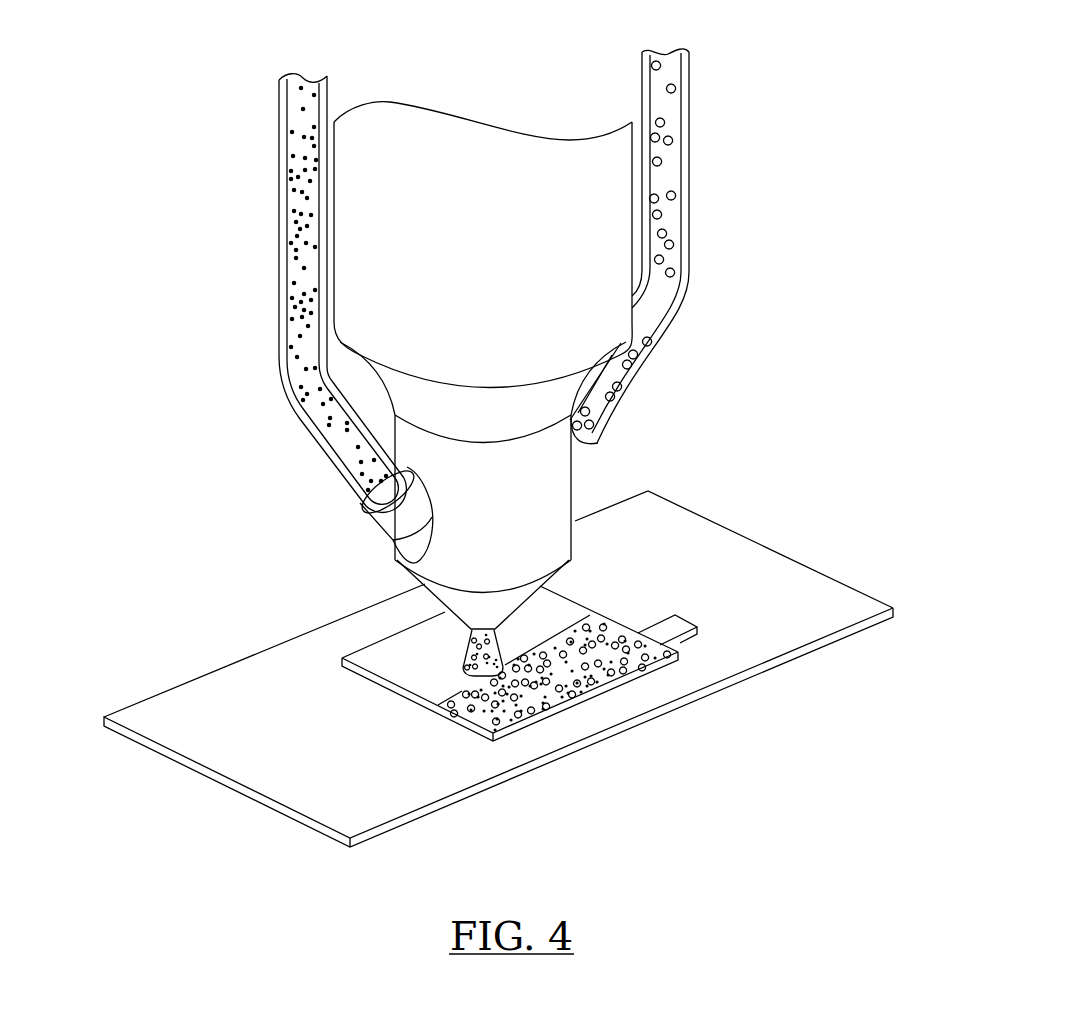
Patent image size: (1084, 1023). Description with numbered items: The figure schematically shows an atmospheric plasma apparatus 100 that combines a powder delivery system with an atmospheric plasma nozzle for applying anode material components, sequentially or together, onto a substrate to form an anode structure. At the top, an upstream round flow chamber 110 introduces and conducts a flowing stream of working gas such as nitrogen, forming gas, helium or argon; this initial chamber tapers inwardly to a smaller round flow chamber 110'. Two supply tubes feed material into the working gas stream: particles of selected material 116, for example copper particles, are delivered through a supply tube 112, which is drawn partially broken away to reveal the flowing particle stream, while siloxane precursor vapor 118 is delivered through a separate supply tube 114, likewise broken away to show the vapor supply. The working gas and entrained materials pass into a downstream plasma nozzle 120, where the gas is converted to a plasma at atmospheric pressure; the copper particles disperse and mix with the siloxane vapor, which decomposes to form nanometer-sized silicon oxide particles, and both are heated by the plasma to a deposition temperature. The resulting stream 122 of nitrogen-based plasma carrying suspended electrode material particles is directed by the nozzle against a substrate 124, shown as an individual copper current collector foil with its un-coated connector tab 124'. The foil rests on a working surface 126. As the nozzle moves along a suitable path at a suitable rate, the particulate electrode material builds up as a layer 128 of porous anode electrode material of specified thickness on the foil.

The atmospheric plasma apparatus 100 is at (815, 70).
The upstream round flow chamber 110 is at (483, 258).
The smaller round flow chamber 110' is at (483, 522).
The supply tube 112 is at (278, 171).
The separate supply tube 114 is at (690, 163).
The particles of selected material 116 is at (294, 281).
The siloxane precursor vapor 118 is at (667, 281).
The plasma nozzle 120 is at (520, 602).
The plasma stream 122 is at (467, 645).
The substrate 124 is at (453, 663).
The un-coated connector tab 124' is at (724, 666).
The working surface 126 is at (193, 700).
The layer of porous anode electrode material 128 is at (517, 697).